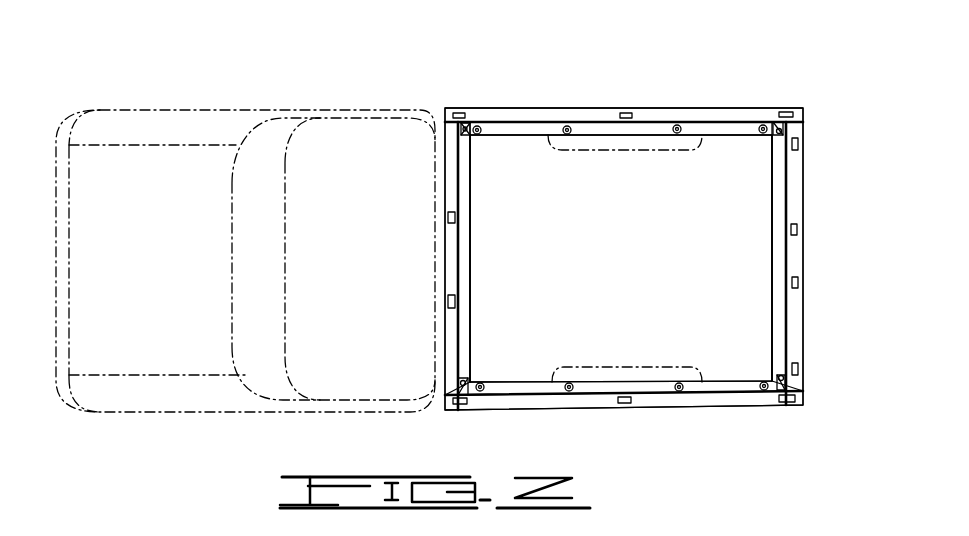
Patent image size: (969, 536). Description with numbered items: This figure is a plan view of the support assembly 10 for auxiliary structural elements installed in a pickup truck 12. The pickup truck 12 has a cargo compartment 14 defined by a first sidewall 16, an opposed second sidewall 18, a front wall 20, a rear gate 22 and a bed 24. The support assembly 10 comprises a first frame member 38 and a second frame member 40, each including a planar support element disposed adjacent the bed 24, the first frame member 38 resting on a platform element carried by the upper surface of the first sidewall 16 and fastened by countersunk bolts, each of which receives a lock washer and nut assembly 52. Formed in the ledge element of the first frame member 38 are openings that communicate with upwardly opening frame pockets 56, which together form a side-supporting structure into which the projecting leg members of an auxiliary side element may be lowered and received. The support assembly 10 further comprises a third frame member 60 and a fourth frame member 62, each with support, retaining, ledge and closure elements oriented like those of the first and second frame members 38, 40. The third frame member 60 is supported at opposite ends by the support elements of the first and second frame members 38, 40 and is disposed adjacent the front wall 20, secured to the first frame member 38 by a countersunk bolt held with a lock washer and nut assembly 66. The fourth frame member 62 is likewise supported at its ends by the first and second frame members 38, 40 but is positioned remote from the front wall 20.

The support assembly 10 is at (544, 107).
The pickup truck 12 is at (427, 108).
The cargo compartment 14 is at (732, 206).
The first sidewall 16 is at (558, 152).
The second sidewall 18 is at (593, 364).
The front wall 20 is at (474, 243).
The rear gate 22 is at (771, 238).
The bed 24 is at (628, 252).
The first frame member 38 is at (671, 104).
The second frame member 40 is at (663, 409).
The lock washer and nut assembly 52 is at (479, 136).
The frame pocket 56 is at (463, 112).
The third frame member 60 is at (473, 280).
The fourth frame member 62 is at (805, 260).
The lock washer and nut assembly 66 is at (466, 137).